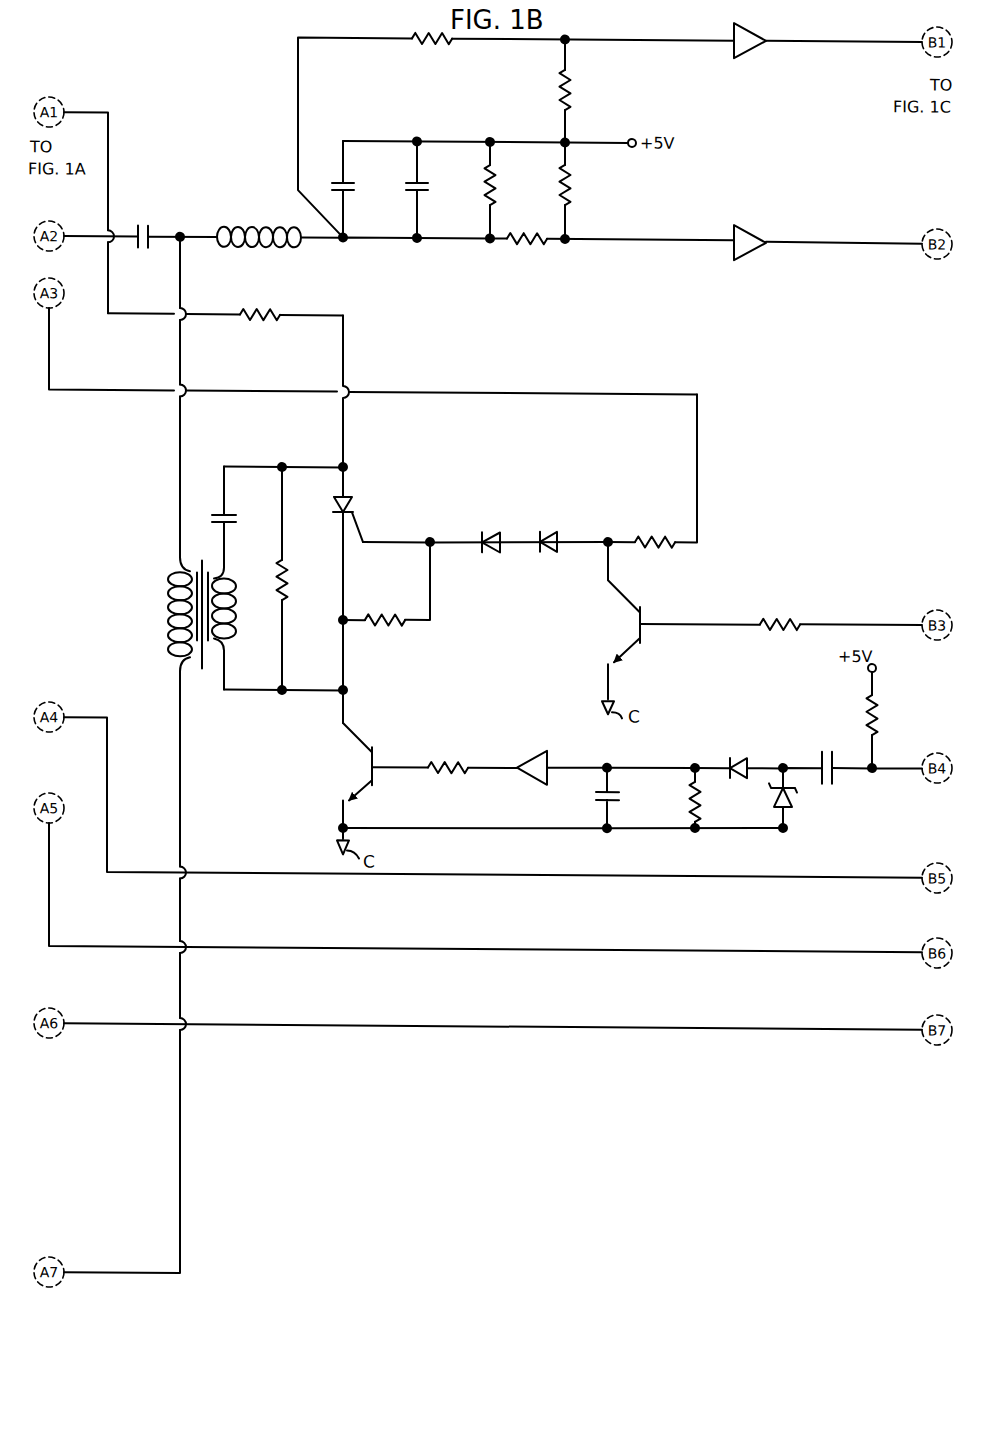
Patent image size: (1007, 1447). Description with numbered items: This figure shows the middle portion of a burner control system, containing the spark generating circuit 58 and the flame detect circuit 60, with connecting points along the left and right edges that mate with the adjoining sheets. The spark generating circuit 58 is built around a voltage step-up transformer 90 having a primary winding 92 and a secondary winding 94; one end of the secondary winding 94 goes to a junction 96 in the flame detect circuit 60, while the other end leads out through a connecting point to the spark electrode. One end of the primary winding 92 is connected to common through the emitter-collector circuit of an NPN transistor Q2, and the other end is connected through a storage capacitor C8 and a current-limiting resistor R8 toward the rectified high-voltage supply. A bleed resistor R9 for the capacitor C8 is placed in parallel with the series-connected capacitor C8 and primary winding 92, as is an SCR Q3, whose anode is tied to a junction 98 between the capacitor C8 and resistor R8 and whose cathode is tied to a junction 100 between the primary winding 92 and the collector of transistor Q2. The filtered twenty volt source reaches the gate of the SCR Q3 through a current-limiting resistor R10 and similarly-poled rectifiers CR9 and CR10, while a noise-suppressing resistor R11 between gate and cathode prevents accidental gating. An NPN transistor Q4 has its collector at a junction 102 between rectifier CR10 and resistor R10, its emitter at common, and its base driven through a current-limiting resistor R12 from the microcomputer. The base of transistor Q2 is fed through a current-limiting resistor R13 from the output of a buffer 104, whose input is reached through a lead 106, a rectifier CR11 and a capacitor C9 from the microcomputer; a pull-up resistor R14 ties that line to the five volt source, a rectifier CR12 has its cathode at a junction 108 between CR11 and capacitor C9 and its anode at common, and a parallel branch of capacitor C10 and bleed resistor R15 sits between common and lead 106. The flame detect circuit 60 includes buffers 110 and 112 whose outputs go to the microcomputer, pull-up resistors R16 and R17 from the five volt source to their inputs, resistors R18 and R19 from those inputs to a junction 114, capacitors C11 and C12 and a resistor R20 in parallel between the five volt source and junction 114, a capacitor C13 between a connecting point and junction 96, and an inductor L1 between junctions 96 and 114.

The spark generating circuit 58 is at (172, 624).
The flame detect circuit 60 is at (162, 272).
The voltage step-up transformer 90 is at (202, 674).
The primary winding 92 is at (236, 616).
The secondary winding 94 is at (168, 624).
The junction 96 is at (178, 228).
The junction 98 is at (340, 464).
The junction 100 is at (352, 690).
The junction 102 is at (610, 533).
The buffer 104 is at (524, 755).
The lead 106 is at (634, 762).
The junction 108 is at (769, 762).
The buffer 110 is at (744, 44).
The buffer 112 is at (745, 234).
The junction 114 is at (341, 244).
The current-limiting resistor R8 is at (252, 312).
The bleed resistor R9 is at (288, 572).
The current-limiting resistor R10 is at (655, 545).
The noise-suppressing resistor R11 is at (390, 623).
The current-limiting resistor R12 is at (785, 616).
The current-limiting resistor R13 is at (439, 757).
The pull-up resistor R14 is at (883, 714).
The bleed resistor R15 is at (704, 794).
The pull-up resistor R16 is at (576, 90).
The pull-up resistor R17 is at (577, 176).
The resistor R18 is at (440, 37).
The resistor R19 is at (525, 245).
The resistor R20 is at (499, 176).
The storage capacitor C8 is at (220, 510).
The capacitor C9 is at (824, 762).
The capacitor C10 is at (602, 800).
The capacitor C11 is at (349, 180).
The capacitor C12 is at (419, 180).
The capacitor C13 is at (152, 220).
The inductor L1 is at (262, 222).
The NPN transistor Q2 is at (348, 778).
The SCR Q3 is at (360, 506).
The NPN transistor Q4 is at (626, 620).
The rectifier CR9 is at (478, 533).
The rectifier CR10 is at (548, 533).
The rectifier CR11 is at (716, 760).
The rectifier CR12 is at (793, 796).